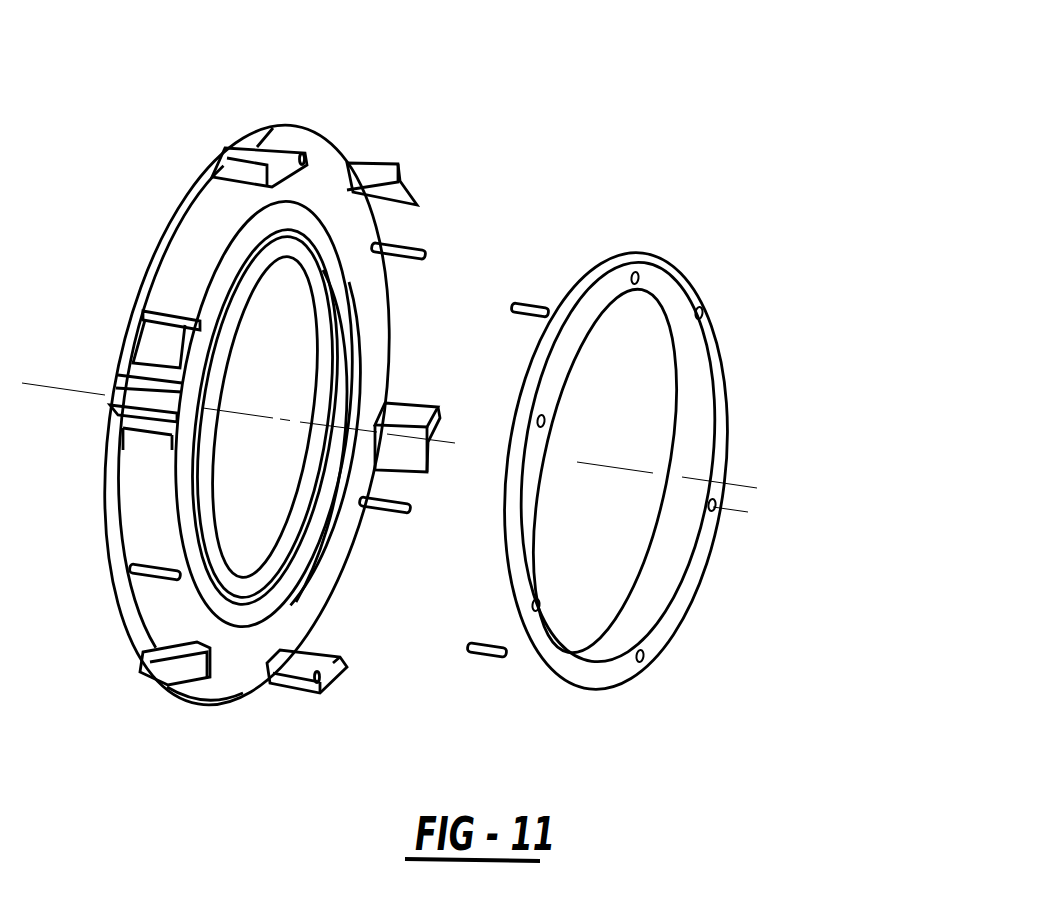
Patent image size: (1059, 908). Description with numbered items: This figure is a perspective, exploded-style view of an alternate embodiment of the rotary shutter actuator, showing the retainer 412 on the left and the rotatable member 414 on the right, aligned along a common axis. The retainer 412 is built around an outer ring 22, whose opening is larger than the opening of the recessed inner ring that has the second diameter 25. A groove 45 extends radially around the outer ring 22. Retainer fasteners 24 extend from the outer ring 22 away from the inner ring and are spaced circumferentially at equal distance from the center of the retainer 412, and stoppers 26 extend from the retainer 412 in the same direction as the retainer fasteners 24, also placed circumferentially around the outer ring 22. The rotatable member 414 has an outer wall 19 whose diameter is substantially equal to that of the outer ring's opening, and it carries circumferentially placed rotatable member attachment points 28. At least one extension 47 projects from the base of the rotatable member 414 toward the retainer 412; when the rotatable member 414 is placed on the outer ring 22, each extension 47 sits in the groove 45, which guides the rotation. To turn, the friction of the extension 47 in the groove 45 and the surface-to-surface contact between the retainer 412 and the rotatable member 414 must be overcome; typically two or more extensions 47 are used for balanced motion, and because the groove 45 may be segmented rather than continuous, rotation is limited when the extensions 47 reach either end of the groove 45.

The retainer 412 is at (375, 120).
The rotatable member 414 is at (616, 426).
The extension 47 is at (527, 292).
The retainer fastener 24 is at (413, 244).
The groove 45 is at (343, 311).
The second diameter 25 is at (243, 580).
The stopper 26 is at (397, 453).
The outer ring 22 is at (231, 674).
The outer wall 19 is at (537, 668).
The rotatable member attachment point 28 is at (713, 520).